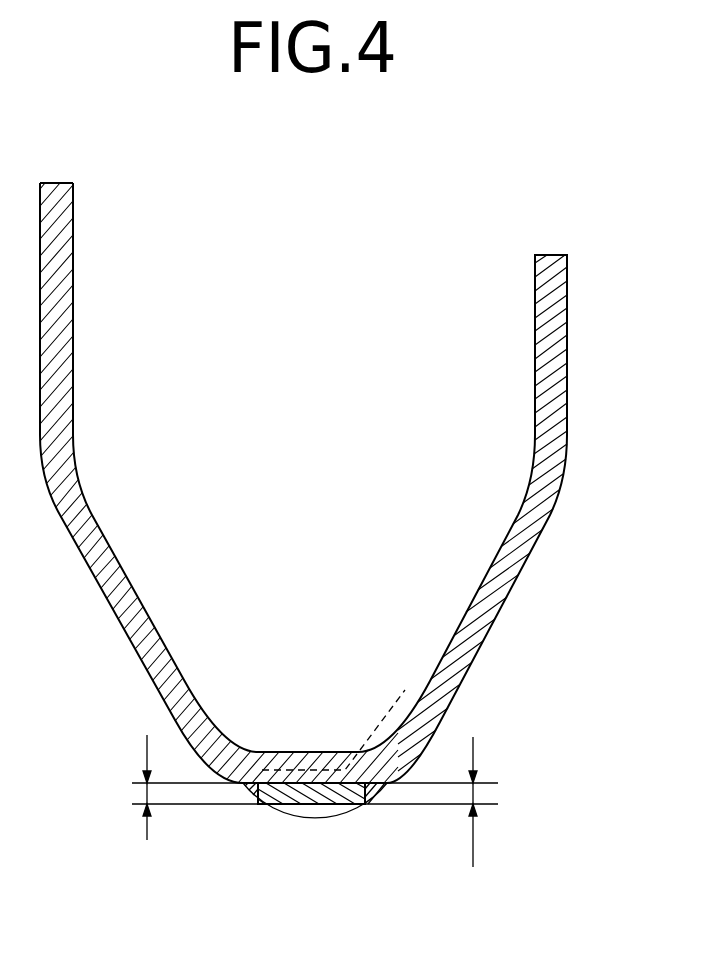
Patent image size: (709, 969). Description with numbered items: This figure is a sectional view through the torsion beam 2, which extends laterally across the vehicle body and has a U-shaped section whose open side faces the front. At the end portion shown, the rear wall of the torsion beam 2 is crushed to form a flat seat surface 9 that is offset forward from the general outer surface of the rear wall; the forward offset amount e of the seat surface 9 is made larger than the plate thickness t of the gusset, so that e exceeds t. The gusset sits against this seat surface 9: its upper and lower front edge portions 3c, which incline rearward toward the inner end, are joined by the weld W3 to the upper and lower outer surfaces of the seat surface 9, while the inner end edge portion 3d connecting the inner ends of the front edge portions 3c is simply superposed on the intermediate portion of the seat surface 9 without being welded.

The torsion beam 2 is at (568, 378).
The front edge portions 3c is at (258, 805).
The inner end edge portion 3d is at (313, 796).
The seat surface 9 is at (275, 806).
The plate thickness t is at (147, 793).
The forward offset amount e is at (473, 800).
The weld W3 is at (242, 788).